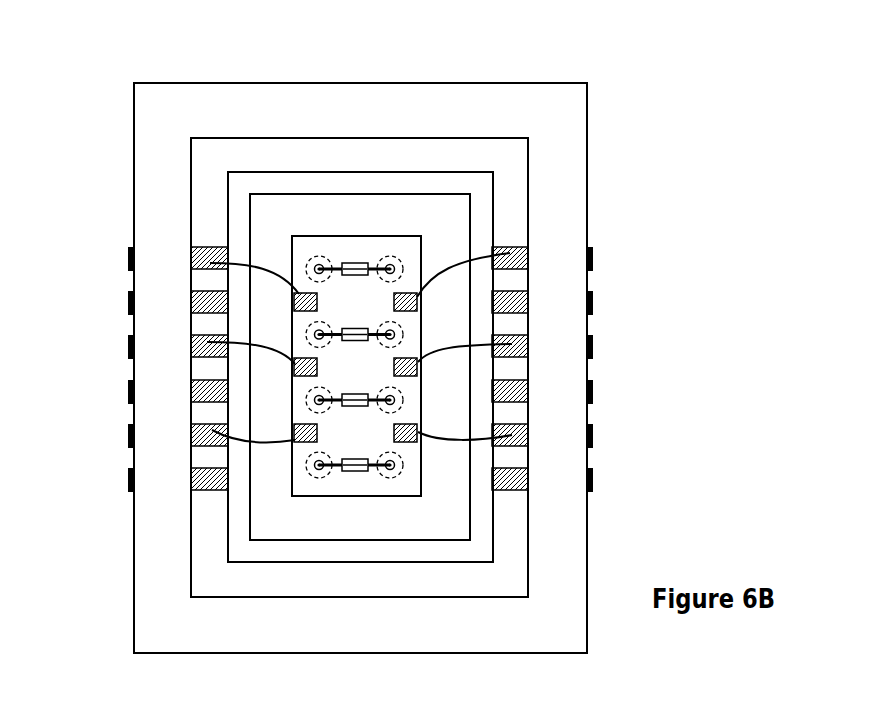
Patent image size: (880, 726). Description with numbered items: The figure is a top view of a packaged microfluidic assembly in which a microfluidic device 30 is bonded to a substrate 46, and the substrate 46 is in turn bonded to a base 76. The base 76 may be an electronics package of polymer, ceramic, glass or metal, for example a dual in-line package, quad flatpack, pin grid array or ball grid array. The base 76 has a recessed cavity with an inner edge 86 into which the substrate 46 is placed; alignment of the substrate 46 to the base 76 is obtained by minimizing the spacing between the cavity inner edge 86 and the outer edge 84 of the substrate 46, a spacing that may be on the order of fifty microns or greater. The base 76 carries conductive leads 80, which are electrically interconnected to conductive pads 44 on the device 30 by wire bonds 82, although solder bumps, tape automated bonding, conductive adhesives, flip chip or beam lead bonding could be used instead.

The base 76 is at (563, 144).
The outer edge of substrate 84 is at (279, 175).
The cavity inner edge 86 is at (306, 152).
The substrate 46 is at (441, 210).
The microfluidic device 30 is at (305, 250).
The conductive leads 80 is at (193, 342).
The wire bonds 82 is at (270, 347).
The conductive pads 44 is at (294, 425).